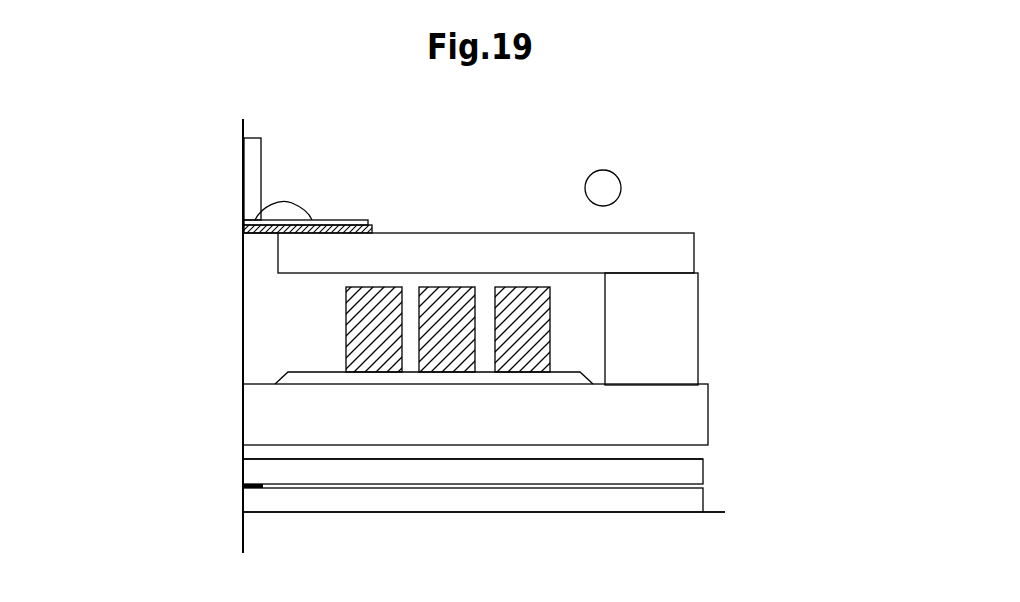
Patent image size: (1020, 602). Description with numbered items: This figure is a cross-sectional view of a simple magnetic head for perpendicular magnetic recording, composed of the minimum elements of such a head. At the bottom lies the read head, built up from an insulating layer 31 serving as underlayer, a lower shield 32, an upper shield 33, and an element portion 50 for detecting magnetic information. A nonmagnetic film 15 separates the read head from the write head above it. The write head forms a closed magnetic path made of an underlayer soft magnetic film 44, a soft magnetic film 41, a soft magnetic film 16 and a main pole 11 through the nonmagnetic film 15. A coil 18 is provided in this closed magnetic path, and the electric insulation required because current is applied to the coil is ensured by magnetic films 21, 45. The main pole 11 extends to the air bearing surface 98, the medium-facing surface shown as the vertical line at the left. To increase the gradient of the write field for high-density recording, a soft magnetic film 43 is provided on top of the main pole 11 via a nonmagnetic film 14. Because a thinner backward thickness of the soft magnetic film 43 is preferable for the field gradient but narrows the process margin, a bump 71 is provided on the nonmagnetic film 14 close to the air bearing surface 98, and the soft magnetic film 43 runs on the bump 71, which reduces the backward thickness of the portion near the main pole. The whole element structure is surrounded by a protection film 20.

The air bearing surface 98 is at (230, 129).
The soft magnetic film 43 is at (253, 197).
The bump 71 is at (245, 218).
The nonmagnetic film 14 is at (245, 228).
The main pole 11 is at (248, 236).
The magnetic film 45 is at (252, 356).
The nonmagnetic film 15 is at (250, 452).
The element portion 50 is at (243, 490).
The protection film 20 is at (621, 186).
The soft magnetic film 16 is at (685, 257).
The coil 18 is at (550, 318).
The soft magnetic film 41 is at (687, 333).
The magnetic film 21 is at (305, 378).
The underlayer soft magnetic film 44 is at (685, 418).
The upper shield 33 is at (685, 477).
The lower shield 32 is at (685, 503).
The insulating layer 31 is at (632, 538).